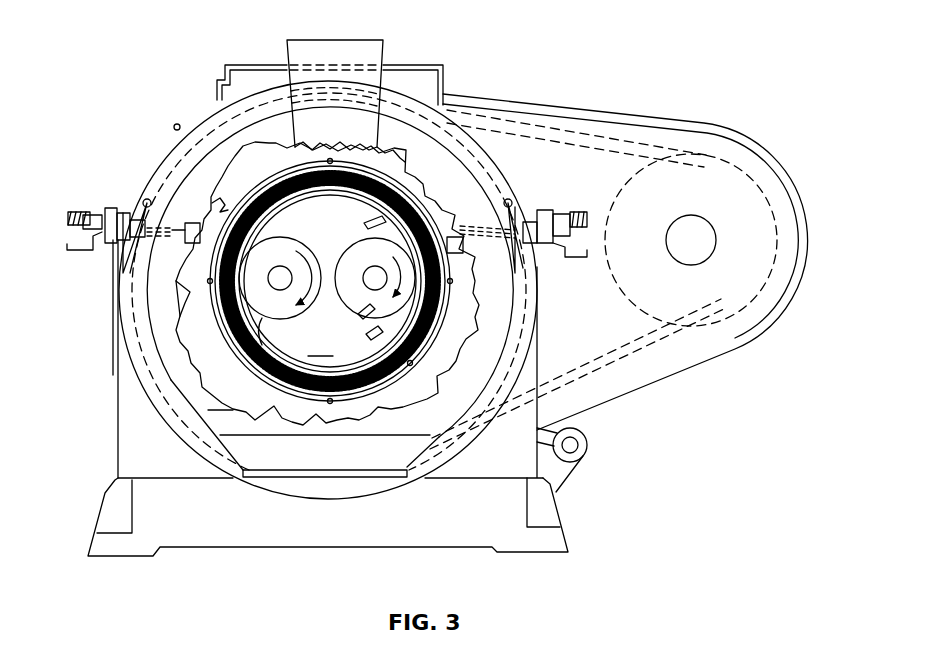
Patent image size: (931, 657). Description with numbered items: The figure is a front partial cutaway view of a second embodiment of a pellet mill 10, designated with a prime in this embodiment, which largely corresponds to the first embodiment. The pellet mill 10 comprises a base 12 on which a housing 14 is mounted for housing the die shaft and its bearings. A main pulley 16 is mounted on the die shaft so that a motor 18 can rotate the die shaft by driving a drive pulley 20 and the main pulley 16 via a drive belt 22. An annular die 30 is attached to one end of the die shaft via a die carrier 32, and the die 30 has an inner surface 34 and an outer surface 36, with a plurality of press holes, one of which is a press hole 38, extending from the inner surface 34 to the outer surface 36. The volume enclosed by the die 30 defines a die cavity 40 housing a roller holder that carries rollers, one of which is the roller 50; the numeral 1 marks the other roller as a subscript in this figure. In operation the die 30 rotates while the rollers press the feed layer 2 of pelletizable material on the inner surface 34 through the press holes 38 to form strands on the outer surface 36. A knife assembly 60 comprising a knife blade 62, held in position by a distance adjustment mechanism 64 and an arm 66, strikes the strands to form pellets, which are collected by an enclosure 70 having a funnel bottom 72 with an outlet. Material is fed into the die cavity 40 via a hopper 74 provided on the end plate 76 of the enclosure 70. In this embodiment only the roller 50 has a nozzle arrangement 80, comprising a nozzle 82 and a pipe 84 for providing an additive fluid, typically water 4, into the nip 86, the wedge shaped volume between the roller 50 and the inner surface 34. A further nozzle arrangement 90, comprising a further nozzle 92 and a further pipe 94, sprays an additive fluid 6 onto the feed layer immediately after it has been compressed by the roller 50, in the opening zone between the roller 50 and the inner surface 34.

The pellet mill 10 is at (134, 40).
The base 12 is at (153, 540).
The housing 14 is at (116, 452).
The main pulley 16 is at (493, 178).
The motor 18 is at (745, 130).
The drive pulley 20 is at (748, 208).
The drive belt 22 is at (600, 372).
The annular die 30 is at (408, 127).
The die carrier 32 is at (215, 160).
The inner surface 34 is at (252, 180).
The outer surface 36 is at (283, 170).
The press hole 38 is at (213, 203).
The water 4 is at (446, 220).
The additive fluid 6 is at (442, 315).
The die cavity 40 is at (322, 343).
The roller 50 is at (283, 255).
The first rotor 1 is at (289, 253).
The feed layer 2 is at (268, 340).
The knife assembly 60 is at (101, 198).
The knife blade 62 is at (190, 287).
The distance adjustment mechanism 64 is at (103, 248).
The arm 66 is at (163, 247).
The enclosure 70 is at (222, 397).
The funnel bottom 72 is at (368, 478).
The hopper 74 is at (386, 58).
The end plate 76 is at (398, 163).
The nozzle arrangement 80 is at (366, 228).
The nozzle 82 is at (393, 238).
The pipe 84 is at (373, 220).
The nip 86 is at (462, 298).
The further nozzle arrangement 90 is at (375, 349).
The further nozzle 92 is at (412, 363).
The further pipe 94 is at (371, 304).